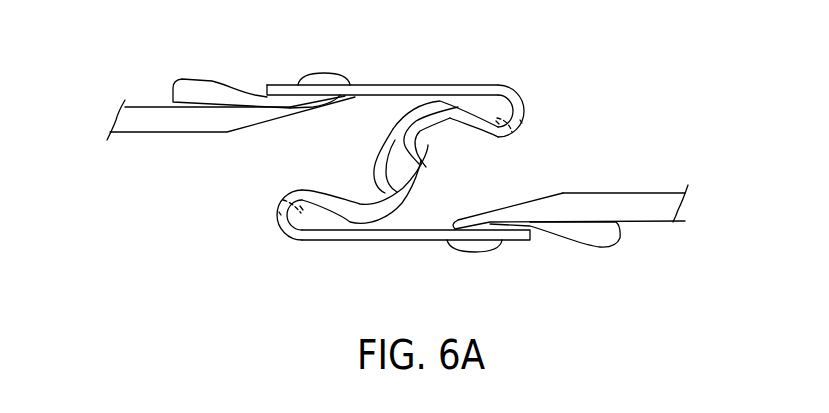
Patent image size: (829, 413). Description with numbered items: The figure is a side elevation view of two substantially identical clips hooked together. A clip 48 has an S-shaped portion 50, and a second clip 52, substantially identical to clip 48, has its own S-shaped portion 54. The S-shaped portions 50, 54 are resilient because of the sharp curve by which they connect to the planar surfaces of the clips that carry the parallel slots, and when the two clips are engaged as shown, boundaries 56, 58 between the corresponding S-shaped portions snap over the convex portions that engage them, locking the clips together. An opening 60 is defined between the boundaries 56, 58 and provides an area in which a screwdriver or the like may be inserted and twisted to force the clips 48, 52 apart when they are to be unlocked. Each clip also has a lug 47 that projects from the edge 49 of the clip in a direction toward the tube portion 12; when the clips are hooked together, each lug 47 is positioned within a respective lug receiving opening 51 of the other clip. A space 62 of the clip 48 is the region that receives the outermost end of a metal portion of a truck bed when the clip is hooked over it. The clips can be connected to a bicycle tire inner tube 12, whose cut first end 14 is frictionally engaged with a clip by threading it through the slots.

The bicycle tire inner tube 12 is at (613, 193).
The first end 14 is at (622, 236).
The lug 47 is at (517, 136).
The clip 48 is at (367, 241).
The edge 49 is at (498, 118).
The S-shaped portion 50 is at (400, 135).
The lug receiving opening 51 is at (524, 120).
The second clip 52 is at (394, 85).
The S-shaped portion 54 is at (428, 168).
The boundary 56 is at (439, 112).
The boundary 58 is at (372, 203).
The opening 60 is at (398, 177).
The space 62 is at (501, 107).